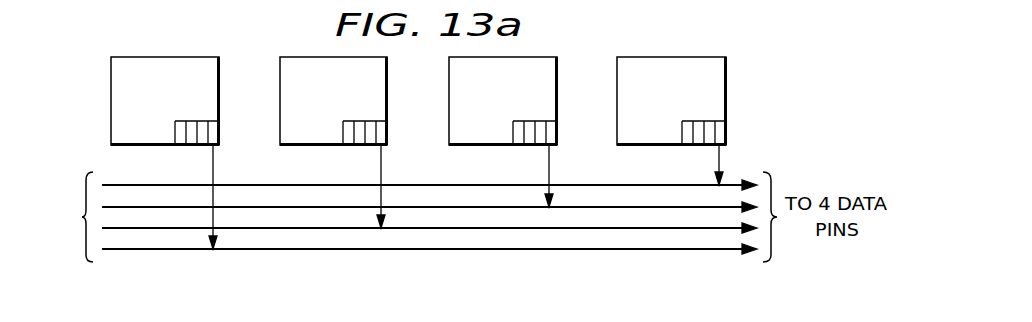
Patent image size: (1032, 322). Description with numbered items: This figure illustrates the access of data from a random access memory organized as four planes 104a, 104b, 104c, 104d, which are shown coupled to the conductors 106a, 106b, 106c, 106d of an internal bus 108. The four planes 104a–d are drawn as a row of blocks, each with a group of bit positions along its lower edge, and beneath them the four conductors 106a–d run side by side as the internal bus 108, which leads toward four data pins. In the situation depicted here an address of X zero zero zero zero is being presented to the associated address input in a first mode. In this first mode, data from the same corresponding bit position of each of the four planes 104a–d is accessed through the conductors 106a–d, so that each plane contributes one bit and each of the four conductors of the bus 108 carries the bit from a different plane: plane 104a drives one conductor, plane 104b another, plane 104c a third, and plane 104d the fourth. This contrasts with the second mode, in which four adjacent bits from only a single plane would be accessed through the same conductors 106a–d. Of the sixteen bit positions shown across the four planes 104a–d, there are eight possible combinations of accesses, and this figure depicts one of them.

The plane 104a is at (111, 88).
The plane 104b is at (280, 70).
The plane 104c is at (557, 70).
The plane 104d is at (726, 90).
The conductor 106a is at (152, 250).
The conductor 106b is at (270, 229).
The conductor 106c is at (268, 205).
The conductor 106d is at (428, 185).
The internal bus 108 is at (408, 214).